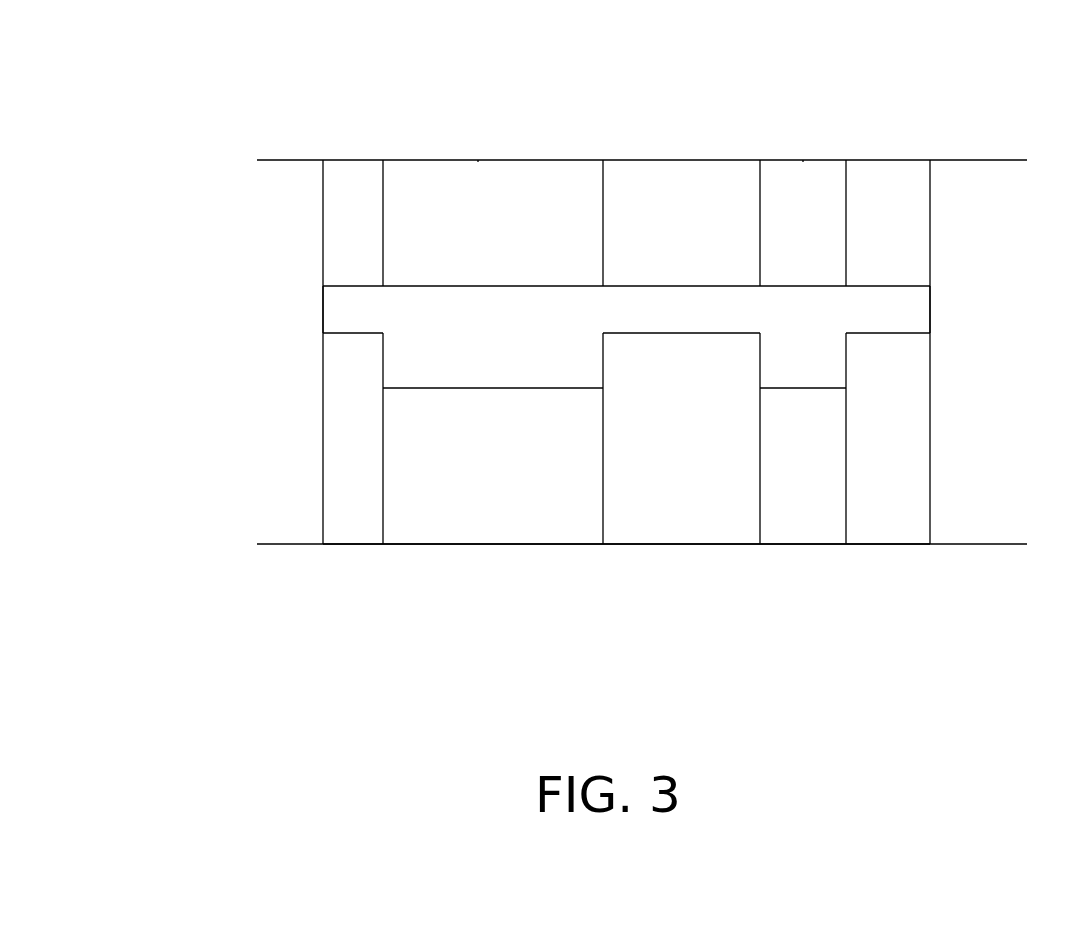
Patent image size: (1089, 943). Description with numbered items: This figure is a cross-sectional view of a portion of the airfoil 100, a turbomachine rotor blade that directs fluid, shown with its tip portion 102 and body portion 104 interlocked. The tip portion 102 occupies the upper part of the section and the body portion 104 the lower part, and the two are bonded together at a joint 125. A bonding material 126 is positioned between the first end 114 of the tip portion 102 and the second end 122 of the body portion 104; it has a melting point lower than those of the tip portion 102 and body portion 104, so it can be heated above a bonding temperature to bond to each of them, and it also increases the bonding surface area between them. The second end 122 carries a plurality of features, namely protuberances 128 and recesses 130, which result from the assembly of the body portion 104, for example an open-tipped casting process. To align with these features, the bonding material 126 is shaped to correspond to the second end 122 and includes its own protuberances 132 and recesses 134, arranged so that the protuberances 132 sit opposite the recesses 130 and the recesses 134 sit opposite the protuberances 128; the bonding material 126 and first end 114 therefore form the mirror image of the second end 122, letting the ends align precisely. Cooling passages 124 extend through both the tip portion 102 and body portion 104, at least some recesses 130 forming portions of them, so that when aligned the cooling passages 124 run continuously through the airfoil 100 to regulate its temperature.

The airfoil 100 is at (190, 227).
The tip portion 102 is at (866, 130).
The body portion 104 is at (884, 578).
The first end 114 is at (905, 285).
The second end 122 is at (898, 333).
The cooling passages 124 is at (383, 238).
The joint 125 is at (248, 310).
The bonding material 126 is at (913, 308).
The protuberances 128 is at (358, 358).
The recesses 130 is at (385, 388).
The protuberances 132 is at (463, 370).
The recesses 134 is at (355, 333).